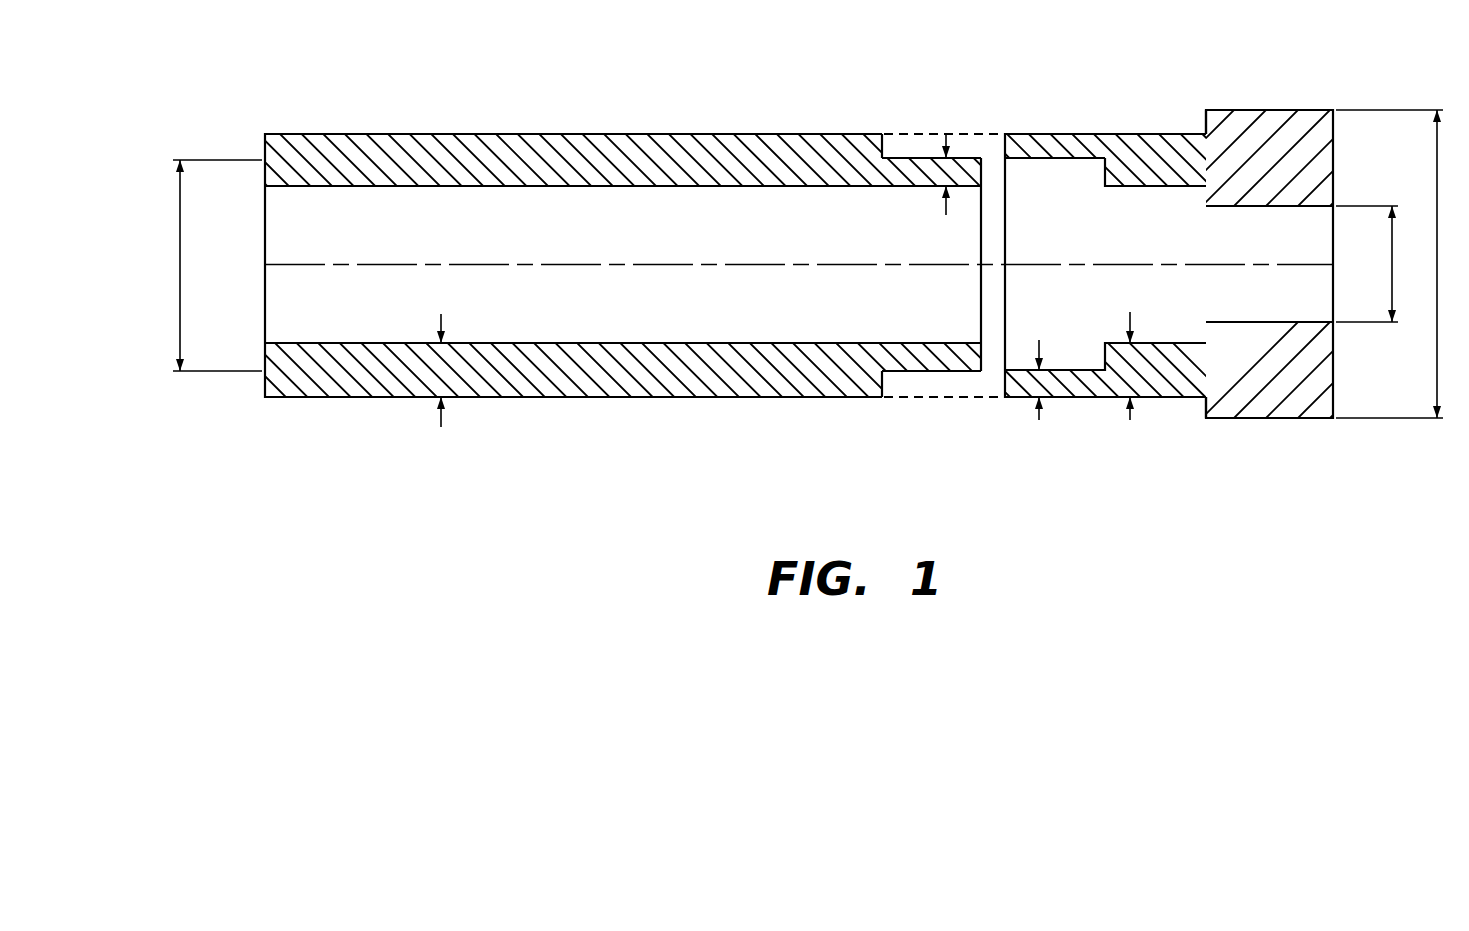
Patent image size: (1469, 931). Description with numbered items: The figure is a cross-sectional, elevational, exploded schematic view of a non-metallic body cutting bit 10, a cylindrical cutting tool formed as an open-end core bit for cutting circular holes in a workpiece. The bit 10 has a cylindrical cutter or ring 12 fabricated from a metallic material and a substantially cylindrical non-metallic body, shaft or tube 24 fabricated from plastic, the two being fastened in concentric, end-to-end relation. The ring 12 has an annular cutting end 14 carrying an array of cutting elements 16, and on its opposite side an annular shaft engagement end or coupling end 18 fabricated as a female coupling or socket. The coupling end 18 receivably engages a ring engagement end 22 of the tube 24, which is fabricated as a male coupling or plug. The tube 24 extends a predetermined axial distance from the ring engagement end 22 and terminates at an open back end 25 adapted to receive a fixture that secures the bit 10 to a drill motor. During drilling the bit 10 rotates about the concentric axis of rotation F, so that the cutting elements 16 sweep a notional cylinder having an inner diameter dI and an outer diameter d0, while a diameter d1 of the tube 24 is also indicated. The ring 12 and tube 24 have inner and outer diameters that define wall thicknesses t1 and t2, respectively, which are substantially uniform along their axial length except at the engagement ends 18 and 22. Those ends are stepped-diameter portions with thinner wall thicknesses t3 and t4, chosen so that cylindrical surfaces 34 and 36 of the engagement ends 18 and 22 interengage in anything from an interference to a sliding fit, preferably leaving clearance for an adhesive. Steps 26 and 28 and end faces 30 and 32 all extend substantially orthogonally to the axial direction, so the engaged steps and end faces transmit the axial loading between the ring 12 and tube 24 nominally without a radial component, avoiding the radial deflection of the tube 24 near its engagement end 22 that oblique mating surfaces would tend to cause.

The cutting bit 10 is at (292, 78).
The cutter 12 is at (1075, 412).
The annular cutting end 14 is at (1207, 148).
The cutting elements 16 is at (1310, 118).
The shaft engagement end 18 is at (1074, 119).
The ring engagement end 22 is at (962, 408).
The cylindrical body 24 is at (746, 133).
The back end 25 is at (300, 237).
The step 26 is at (1104, 172).
The step 28 is at (880, 382).
The end face 30 is at (1000, 146).
The end face 32 is at (983, 358).
The cylindrical surface 34 is at (1069, 370).
The cylindrical surface 36 is at (928, 372).
The concentric axis F is at (358, 265).
The mean tube diameter d1 is at (205, 265).
The inner diameter dI is at (1375, 264).
The outer diameter d0 is at (1402, 264).
The wall thickness t1 is at (1130, 384).
The wall thickness t2 is at (441, 385).
The wall thickness t3 is at (1039, 398).
The wall thickness t4 is at (946, 189).